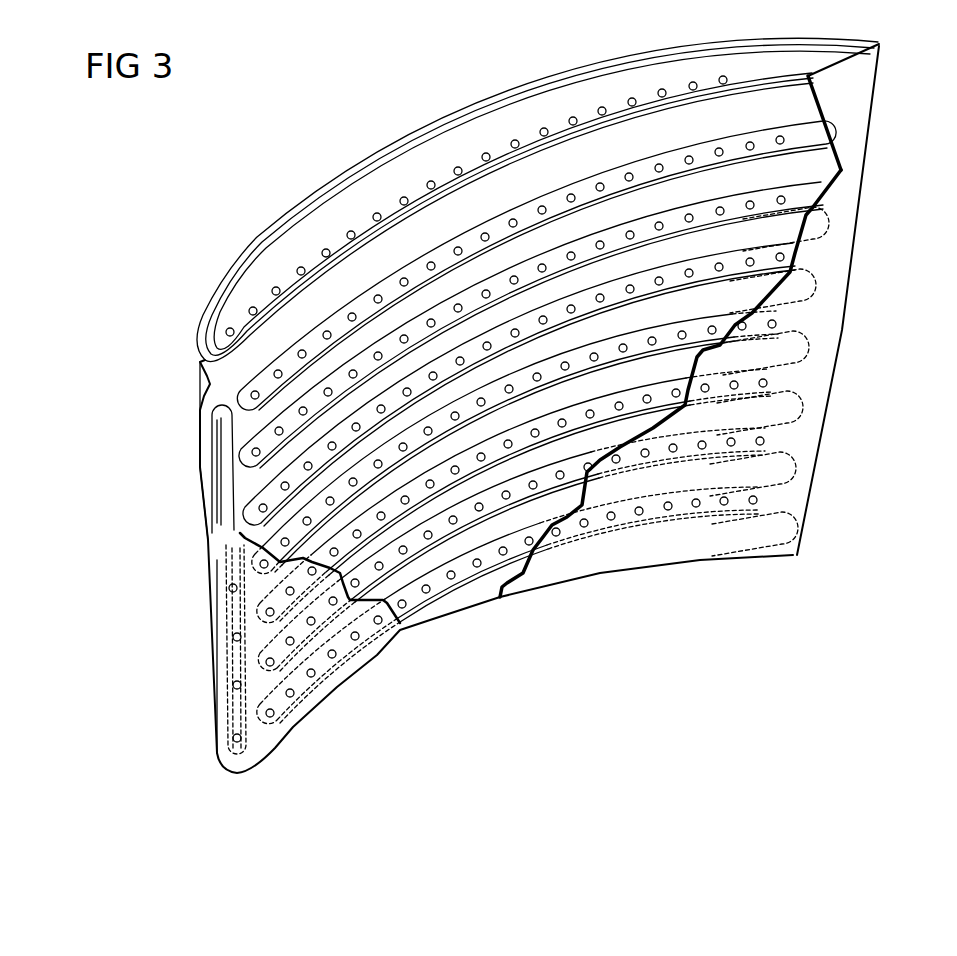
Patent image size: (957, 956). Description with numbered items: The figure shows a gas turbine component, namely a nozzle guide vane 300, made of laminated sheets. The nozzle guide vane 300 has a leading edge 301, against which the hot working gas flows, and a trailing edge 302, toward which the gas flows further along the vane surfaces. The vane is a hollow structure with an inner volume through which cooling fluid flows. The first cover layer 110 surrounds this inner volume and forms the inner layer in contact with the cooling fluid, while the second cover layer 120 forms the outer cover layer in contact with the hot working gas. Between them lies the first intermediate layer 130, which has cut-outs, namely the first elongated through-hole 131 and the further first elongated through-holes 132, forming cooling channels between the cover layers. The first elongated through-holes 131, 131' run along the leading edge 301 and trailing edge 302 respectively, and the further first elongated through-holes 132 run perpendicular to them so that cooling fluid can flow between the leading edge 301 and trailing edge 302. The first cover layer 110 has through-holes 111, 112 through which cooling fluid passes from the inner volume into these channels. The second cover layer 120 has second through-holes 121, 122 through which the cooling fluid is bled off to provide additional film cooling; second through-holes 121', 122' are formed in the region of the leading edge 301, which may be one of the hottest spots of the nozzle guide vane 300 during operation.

The nozzle guide vane 300 is at (280, 185).
The first cover layer 110 is at (427, 158).
The through-hole 111 is at (377, 213).
The through-hole 112 is at (780, 136).
The second cover layer 120 is at (305, 708).
The second through-hole 121 is at (515, 517).
The second through-hole 122 is at (515, 515).
The second through-hole 121' is at (159, 649).
The second through-hole 122' is at (236, 648).
The first intermediate layer 130 is at (450, 605).
The first elongated through-hole 131 is at (854, 300).
The first elongated through-hole 131' is at (184, 464).
The further first elongated through-hole 132 is at (732, 153).
The leading edge 301 is at (213, 381).
The trailing edge 302 is at (881, 47).